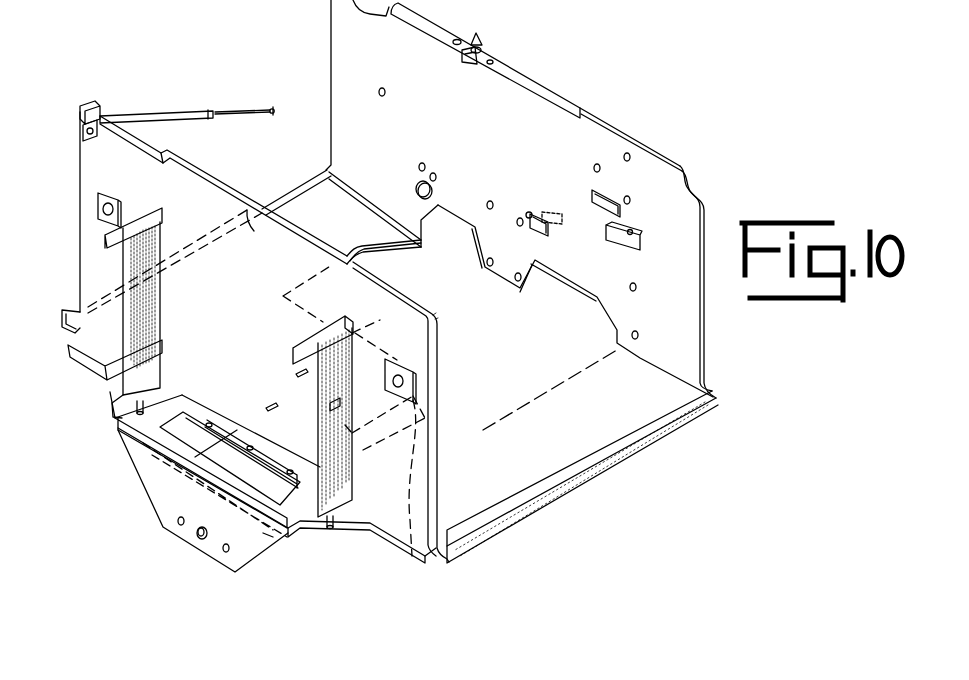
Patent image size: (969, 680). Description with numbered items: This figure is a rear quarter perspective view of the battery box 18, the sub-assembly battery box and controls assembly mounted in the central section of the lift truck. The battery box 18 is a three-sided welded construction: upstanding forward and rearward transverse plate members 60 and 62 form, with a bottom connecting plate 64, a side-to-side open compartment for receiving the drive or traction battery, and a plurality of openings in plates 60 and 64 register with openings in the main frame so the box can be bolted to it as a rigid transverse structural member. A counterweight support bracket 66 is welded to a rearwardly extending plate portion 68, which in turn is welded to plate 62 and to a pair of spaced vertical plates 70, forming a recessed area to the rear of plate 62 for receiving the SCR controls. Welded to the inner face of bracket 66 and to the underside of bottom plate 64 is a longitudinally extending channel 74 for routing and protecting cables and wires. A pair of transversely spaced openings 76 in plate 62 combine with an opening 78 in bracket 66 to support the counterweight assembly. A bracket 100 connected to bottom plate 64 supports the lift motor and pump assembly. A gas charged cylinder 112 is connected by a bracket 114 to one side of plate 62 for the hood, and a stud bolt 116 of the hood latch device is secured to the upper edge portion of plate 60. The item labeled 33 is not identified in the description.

The battery box 18 is at (688, 149).
The cover 33 is at (106, 5).
The forward transverse plate member 60 is at (532, 142).
The rearward transverse plate member 62 is at (218, 208).
The bottom connecting plate 64 is at (650, 412).
The counterweight support bracket 66 is at (245, 552).
The rearwardly extending plate portion 68 is at (353, 517).
The vertical plates 70 is at (150, 318).
The channel 74 is at (200, 483).
The openings 76 is at (100, 209).
The opening 78 is at (198, 538).
The bracket 100 is at (413, 558).
The gas charged cylinder 112 is at (150, 118).
The bracket 114 is at (95, 103).
The stud bolt 116 is at (486, 44).